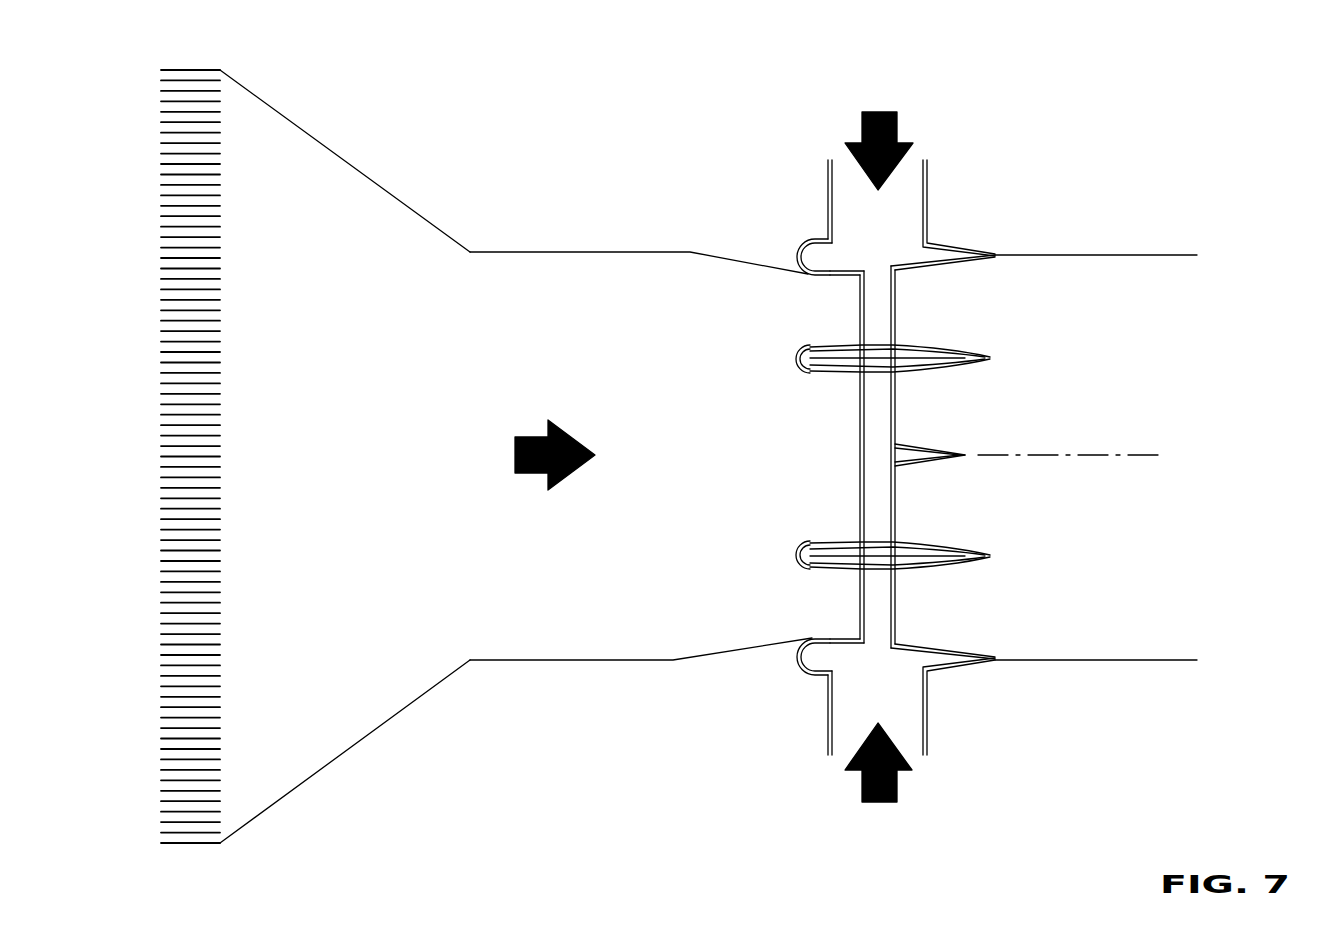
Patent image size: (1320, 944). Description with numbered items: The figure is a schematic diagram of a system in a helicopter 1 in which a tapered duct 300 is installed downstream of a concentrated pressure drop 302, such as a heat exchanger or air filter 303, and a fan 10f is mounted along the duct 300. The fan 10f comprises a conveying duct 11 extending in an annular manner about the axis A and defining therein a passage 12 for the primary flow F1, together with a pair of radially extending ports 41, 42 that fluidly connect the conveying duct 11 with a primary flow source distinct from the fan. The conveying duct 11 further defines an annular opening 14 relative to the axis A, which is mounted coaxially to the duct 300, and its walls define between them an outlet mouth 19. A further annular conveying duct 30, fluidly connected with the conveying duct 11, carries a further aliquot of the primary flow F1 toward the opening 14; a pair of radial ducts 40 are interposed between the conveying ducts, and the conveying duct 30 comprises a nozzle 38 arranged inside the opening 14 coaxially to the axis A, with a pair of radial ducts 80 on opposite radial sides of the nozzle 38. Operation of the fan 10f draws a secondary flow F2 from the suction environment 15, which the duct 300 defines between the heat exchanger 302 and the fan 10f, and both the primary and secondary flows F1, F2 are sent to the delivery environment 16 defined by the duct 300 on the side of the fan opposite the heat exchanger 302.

The helicopter 1 is at (845, 445).
The fan 10f is at (772, 568).
The conveying duct 11 is at (962, 240).
The passage 12 is at (838, 248).
The annular opening 14 is at (915, 640).
The suction environment 15 is at (560, 258).
The delivery environment 16 is at (1085, 257).
The outlet mouth 19 is at (800, 268).
The further annular conveying duct 30 is at (977, 350).
The nozzle 38 is at (965, 445).
The radial ducts 40 is at (882, 320).
The port 41 is at (842, 185).
The port 42 is at (840, 700).
The radial ducts 80 is at (925, 428).
The tapered duct 300 is at (363, 118).
The concentrated pressure drop 302 is at (185, 160).
The heat exchanger or air filter 303 is at (132, 436).
The axis A is at (1150, 457).
The primary flow F1 is at (535, 430).
The secondary flow F2 is at (905, 135).